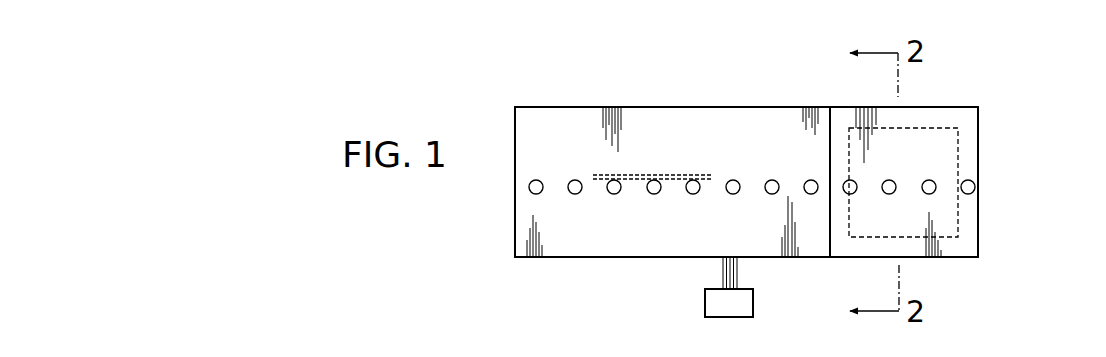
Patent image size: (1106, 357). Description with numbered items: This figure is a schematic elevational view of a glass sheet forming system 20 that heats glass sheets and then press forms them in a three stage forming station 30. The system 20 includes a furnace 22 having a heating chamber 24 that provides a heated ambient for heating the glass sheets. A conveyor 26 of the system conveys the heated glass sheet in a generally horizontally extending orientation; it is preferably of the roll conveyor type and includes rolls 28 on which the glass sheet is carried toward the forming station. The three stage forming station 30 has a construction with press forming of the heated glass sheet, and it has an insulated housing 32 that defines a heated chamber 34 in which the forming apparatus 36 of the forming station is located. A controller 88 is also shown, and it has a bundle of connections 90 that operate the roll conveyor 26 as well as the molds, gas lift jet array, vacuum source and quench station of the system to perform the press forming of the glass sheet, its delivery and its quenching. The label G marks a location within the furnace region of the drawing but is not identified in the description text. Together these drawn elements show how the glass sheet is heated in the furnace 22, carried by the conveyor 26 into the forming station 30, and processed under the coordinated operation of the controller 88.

The glass sheet forming system 20 is at (738, 78).
The furnace 22 is at (640, 105).
The heating chamber 24 is at (735, 128).
The conveyor 26 is at (522, 187).
The rolls 28 is at (693, 194).
The three stage forming station 30 is at (923, 83).
The insulated housing 32 is at (945, 107).
The heated chamber 34 is at (968, 155).
The forming apparatus 36 is at (960, 127).
The controller 88 is at (753, 303).
The bundle of connections 90 is at (722, 270).
The gap G is at (602, 172).